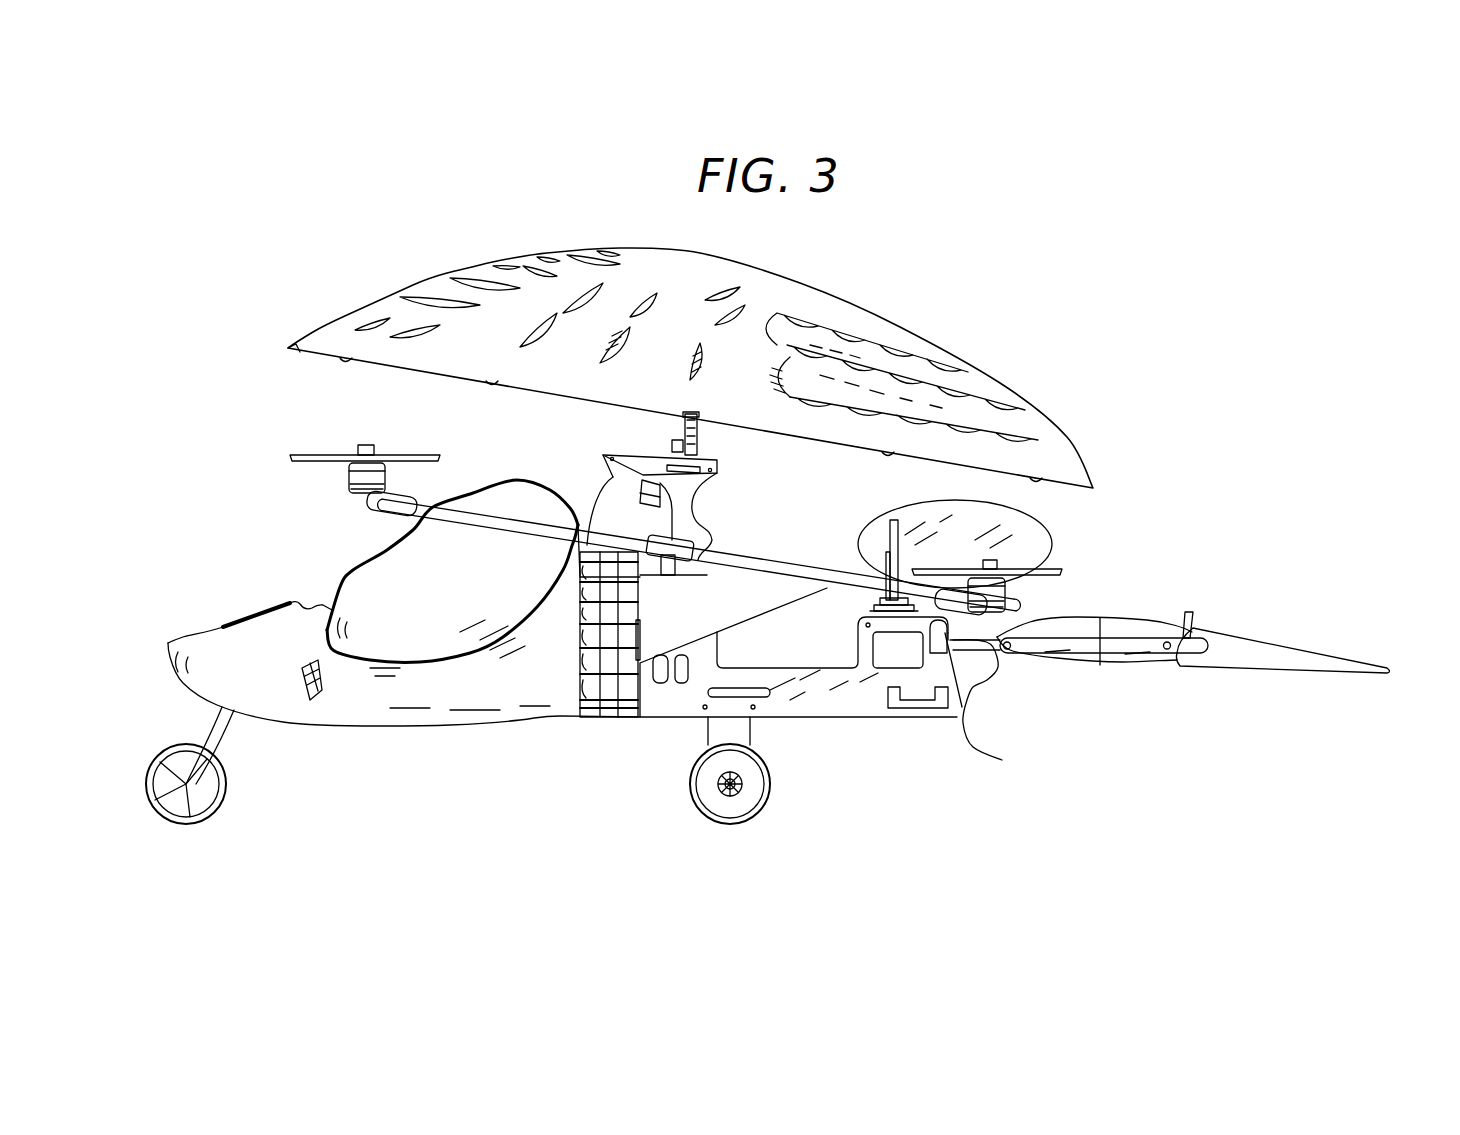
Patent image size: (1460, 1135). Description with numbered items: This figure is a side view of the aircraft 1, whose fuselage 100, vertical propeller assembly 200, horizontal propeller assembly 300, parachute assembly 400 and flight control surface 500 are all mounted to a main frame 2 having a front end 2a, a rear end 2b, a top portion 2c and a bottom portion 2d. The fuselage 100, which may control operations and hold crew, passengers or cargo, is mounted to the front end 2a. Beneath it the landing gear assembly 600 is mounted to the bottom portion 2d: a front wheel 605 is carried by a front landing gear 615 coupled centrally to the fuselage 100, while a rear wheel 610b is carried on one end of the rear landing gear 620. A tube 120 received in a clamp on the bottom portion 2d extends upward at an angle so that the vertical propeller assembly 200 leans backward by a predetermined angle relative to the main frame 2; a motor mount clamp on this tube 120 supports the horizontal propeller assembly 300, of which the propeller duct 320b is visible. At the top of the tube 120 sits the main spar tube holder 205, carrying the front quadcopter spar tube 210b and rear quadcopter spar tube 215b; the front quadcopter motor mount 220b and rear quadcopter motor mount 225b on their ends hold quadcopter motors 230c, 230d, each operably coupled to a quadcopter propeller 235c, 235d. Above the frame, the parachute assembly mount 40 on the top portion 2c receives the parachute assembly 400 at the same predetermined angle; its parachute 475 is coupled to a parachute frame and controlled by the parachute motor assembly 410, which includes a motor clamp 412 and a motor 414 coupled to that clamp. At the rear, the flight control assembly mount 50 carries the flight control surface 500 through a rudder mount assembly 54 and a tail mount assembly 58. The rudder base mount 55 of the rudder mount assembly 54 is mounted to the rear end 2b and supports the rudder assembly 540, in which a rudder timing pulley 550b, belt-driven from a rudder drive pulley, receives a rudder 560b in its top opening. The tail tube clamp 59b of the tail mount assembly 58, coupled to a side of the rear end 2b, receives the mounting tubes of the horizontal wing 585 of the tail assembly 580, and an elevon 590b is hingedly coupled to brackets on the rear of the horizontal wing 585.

The aircraft 1 is at (1235, 290).
The main frame 2 is at (670, 723).
The front end 2a is at (490, 768).
The rear end 2b is at (930, 752).
The top portion 2c is at (552, 428).
The bottom portion 2d is at (670, 775).
The parachute assembly mount 40 is at (722, 452).
The flight control assembly mount 50 is at (1004, 675).
The rudder mount assembly 54 is at (815, 630).
The rudder base mount 55 is at (862, 636).
The tail mount assembly 58 is at (982, 700).
The tail tube clamp 59b is at (985, 754).
The fuselage 100 is at (292, 723).
The tube 120 is at (665, 576).
The vertical propeller assembly 200 is at (720, 532).
The main spar tube holder 205 is at (678, 551).
The front quadcopter spar tube 210b is at (505, 522).
The rear quadcopter spar tube 215b is at (755, 568).
The front quadcopter motor mount 220b is at (384, 509).
The rear quadcopter motor mount 225b is at (988, 617).
The quadcopter motor 230c is at (1010, 590).
The quadcopter motor 230d is at (355, 473).
The quadcopter propeller 235c is at (1060, 572).
The quadcopter propeller 235d is at (333, 455).
The horizontal propeller assembly 300 is at (604, 765).
The propeller duct 320b is at (608, 706).
The parachute assembly 400 is at (690, 368).
The parachute motor assembly 410 is at (677, 499).
The motor clamp 412 is at (641, 495).
The motor 414 is at (640, 490).
The parachute 475 is at (922, 368).
The flight control surface 500 is at (1196, 679).
The rudder assembly 540 is at (1058, 527).
The rudder timing pulley 550b is at (866, 607).
The rudder 560b is at (910, 525).
The tail assembly 580 is at (1193, 716).
The horizontal wing 585 is at (1128, 630).
The elevon 590b is at (1250, 652).
The landing gear assembly 600 is at (473, 778).
The front wheel 605 is at (170, 778).
The rear wheel 610b is at (758, 778).
The front landing gear 615 is at (214, 745).
The rear landing gear 620 is at (735, 730).